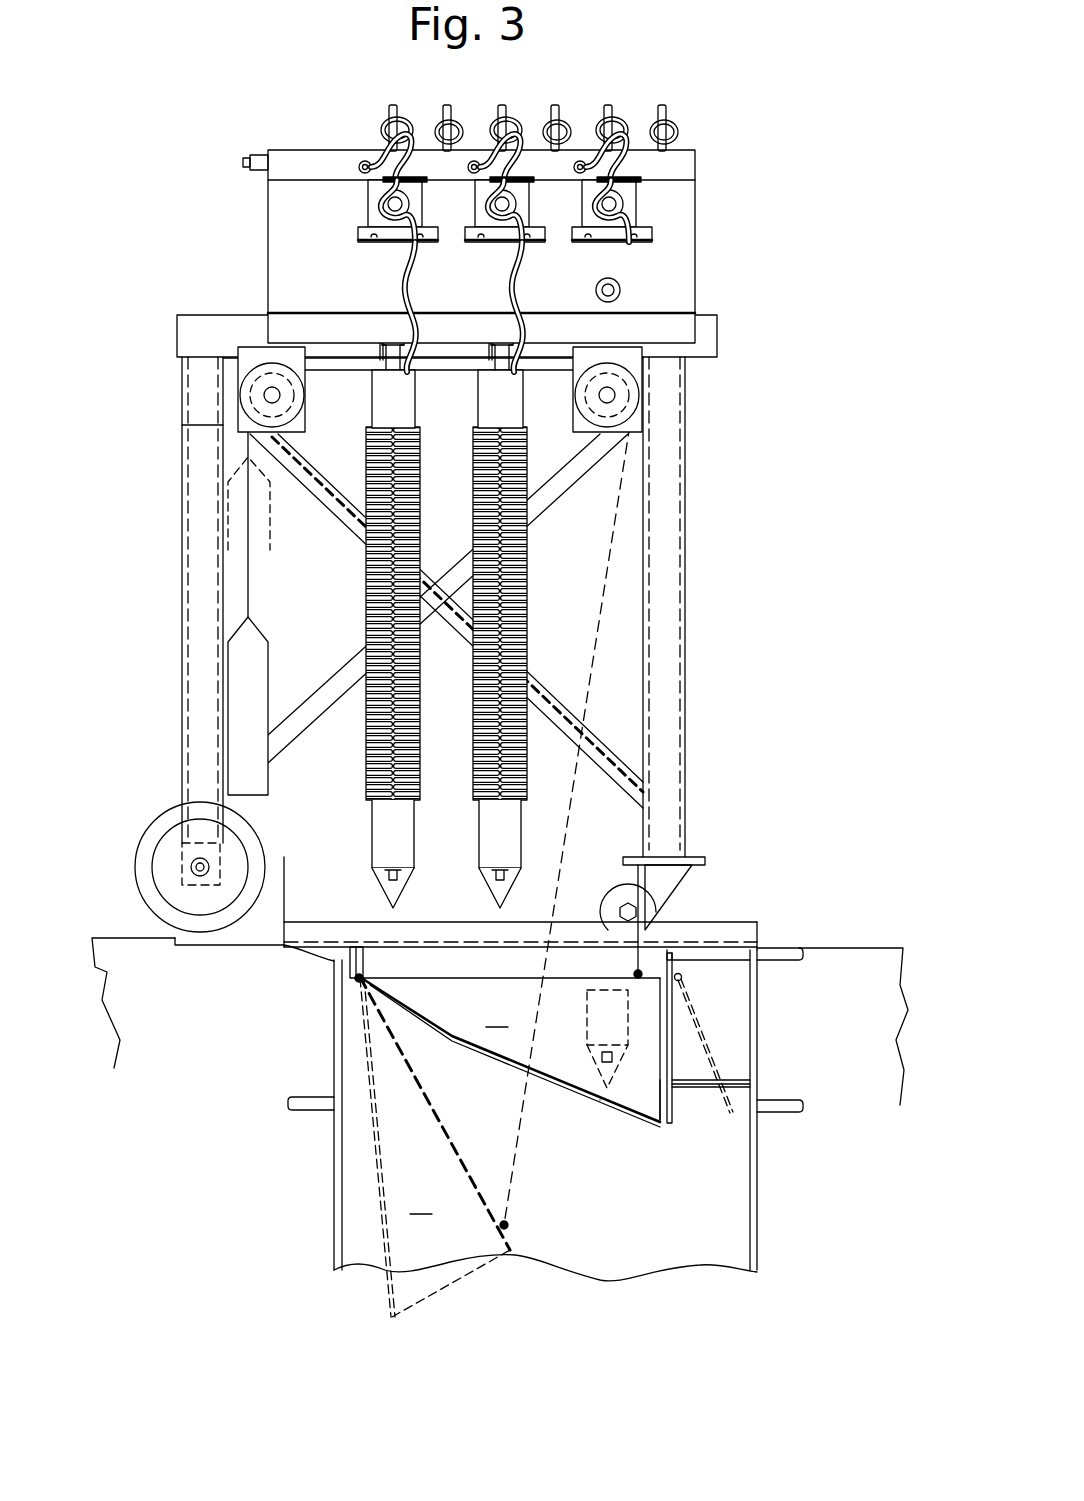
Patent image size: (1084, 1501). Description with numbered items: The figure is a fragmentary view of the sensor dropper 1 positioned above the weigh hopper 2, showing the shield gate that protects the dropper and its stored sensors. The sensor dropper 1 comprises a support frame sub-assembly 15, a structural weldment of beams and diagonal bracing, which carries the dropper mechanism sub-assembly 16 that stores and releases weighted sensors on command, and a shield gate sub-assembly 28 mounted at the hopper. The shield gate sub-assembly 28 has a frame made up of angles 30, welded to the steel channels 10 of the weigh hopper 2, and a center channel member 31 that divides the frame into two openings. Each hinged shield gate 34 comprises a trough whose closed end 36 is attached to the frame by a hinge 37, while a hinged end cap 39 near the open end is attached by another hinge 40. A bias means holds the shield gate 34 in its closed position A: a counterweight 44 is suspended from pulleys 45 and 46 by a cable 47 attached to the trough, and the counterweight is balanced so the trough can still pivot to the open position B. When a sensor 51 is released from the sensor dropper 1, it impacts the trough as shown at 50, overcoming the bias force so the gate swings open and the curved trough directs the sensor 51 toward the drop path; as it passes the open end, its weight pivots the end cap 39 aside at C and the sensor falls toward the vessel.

The sensor dropper 1 is at (707, 142).
The weigh hopper 2 is at (594, 1304).
The steel channels 10 is at (310, 1106).
The support frame sub-assembly 15 is at (150, 586).
The dropper mechanism sub-assembly 16 is at (242, 244).
The shield gate sub-assembly 28 is at (646, 1158).
The angles 30 is at (346, 946).
The center channel member 31 is at (430, 963).
The hinged shield gate 34 is at (610, 1093).
The closed end 36 is at (418, 1020).
The hinge 37 is at (356, 980).
The hinged end cap 39 is at (676, 1108).
The hinge 40 is at (683, 978).
The counterweight 44 is at (270, 530).
The pulley 45 is at (248, 398).
The pulley 46 is at (638, 395).
The cable 47 is at (436, 372).
The impact location 50 is at (627, 1122).
The sensor 51 is at (378, 398).